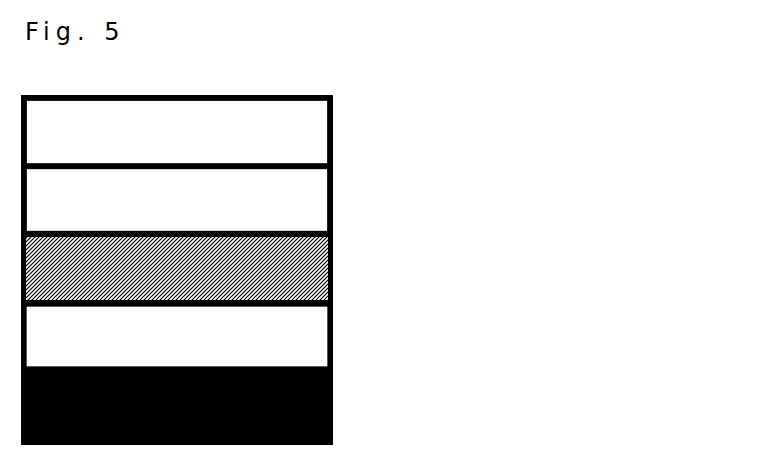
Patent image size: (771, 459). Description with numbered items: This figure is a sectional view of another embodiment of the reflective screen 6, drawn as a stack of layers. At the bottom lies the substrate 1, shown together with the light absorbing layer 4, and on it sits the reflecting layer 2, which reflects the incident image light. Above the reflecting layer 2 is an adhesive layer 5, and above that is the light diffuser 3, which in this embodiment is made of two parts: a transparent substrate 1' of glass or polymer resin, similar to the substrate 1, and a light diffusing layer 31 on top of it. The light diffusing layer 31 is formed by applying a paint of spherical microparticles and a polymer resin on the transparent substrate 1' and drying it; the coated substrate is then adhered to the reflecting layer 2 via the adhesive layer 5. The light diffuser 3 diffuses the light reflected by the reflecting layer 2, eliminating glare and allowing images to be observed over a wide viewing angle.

The reflective screen 6 is at (630, 100).
The light diffuser 3 is at (512, 112).
The light diffusing layer 31 is at (250, 132).
The transparent substrate 1' is at (242, 202).
The adhesive layer 5 is at (250, 272).
The reflecting layer 2 is at (250, 340).
The substrate 1 is at (253, 404).
The light absorbing layer 4 is at (261, 404).